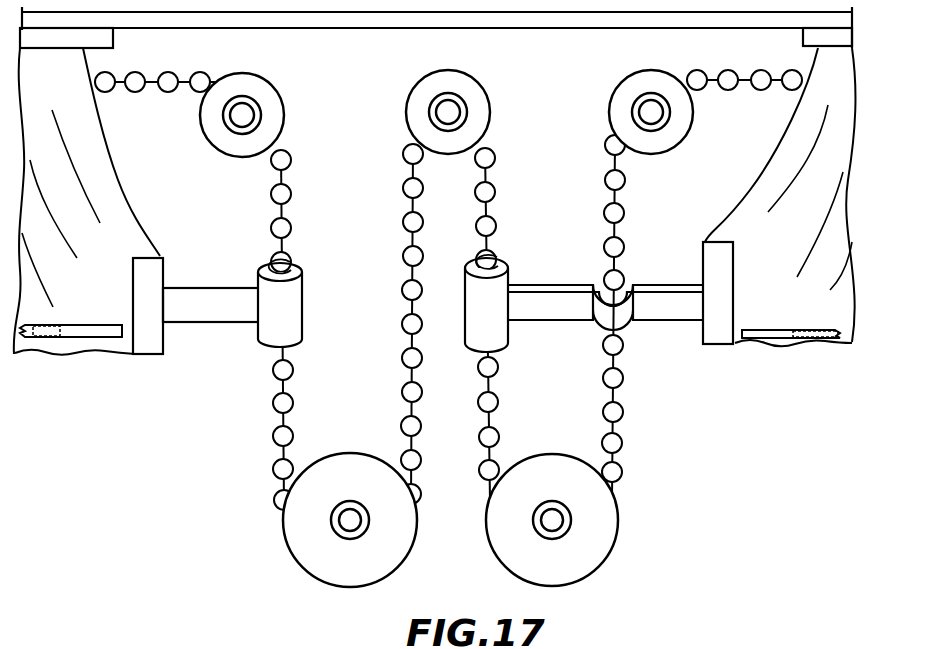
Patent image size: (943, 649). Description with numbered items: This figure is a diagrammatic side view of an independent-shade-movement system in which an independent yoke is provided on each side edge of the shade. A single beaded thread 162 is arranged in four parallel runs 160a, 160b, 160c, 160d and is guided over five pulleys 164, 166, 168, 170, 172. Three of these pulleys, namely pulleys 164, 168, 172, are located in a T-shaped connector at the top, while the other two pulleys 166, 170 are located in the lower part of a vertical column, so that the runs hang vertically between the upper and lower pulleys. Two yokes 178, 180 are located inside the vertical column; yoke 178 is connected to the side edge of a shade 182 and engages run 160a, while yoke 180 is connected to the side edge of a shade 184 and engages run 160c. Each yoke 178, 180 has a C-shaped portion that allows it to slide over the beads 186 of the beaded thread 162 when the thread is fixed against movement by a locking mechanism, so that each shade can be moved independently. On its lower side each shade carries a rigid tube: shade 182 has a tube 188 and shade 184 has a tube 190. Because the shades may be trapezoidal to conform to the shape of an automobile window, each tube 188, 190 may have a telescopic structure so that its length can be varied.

The run 160a is at (343, 397).
The run 160b is at (392, 324).
The run 160c is at (518, 430).
The run 160d is at (638, 362).
The beaded thread 162 is at (372, 252).
The pulley 164 is at (234, 150).
The pulley 166 is at (299, 540).
The pulley 168 is at (483, 108).
The pulley 170 is at (597, 545).
The pulley 172 is at (668, 140).
The yoke 178 is at (267, 328).
The yoke 180 is at (498, 328).
The shade 182 is at (37, 308).
The shade 184 is at (773, 293).
The beads 186 is at (290, 192).
The tube 188 is at (48, 338).
The tube 190 is at (808, 343).